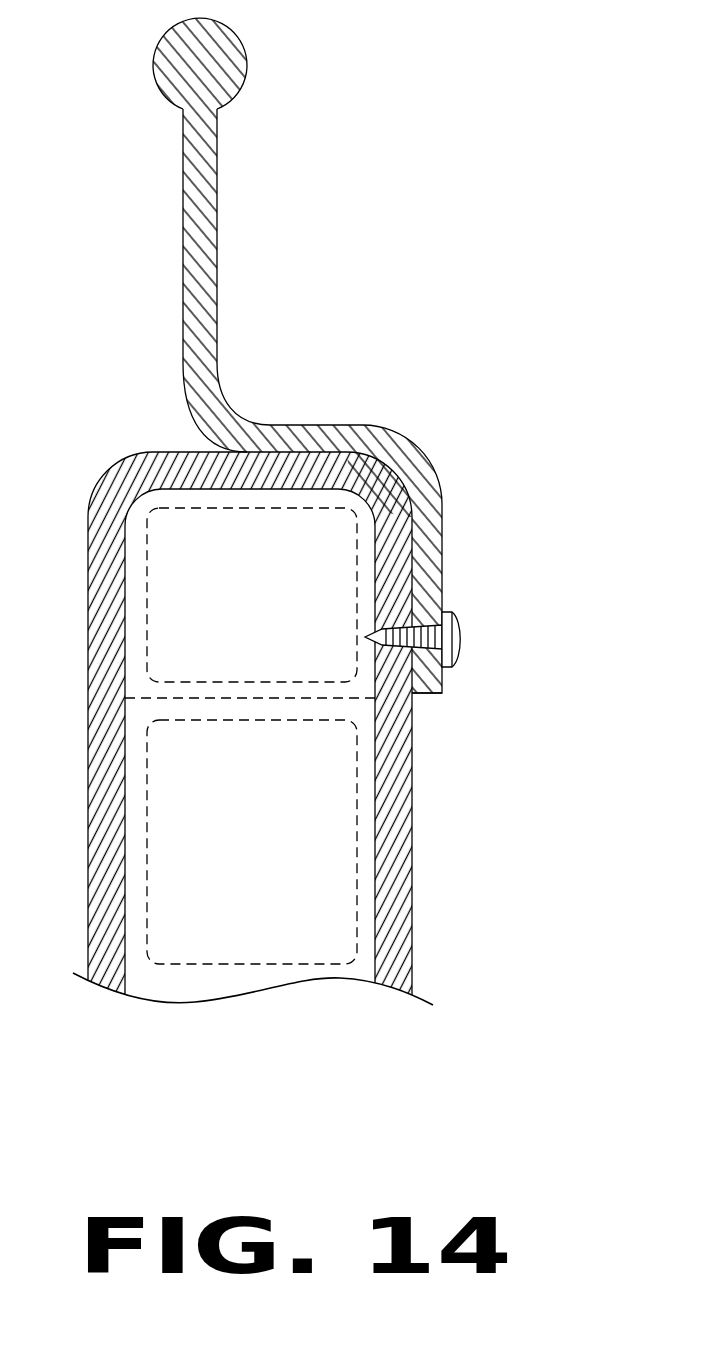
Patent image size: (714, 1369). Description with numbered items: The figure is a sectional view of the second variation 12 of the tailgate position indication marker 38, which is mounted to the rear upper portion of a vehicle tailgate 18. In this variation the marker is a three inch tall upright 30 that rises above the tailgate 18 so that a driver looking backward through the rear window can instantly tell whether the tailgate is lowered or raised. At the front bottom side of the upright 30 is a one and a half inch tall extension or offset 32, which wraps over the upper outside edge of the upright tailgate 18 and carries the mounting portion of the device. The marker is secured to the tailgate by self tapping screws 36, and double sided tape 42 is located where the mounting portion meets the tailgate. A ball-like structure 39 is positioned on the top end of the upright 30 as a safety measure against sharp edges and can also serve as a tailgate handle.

The second variation 12 is at (356, 480).
The tailgate 18 is at (323, 731).
The upright marker 30 is at (183, 267).
The extension or offset 32 is at (323, 423).
The self tapping screws 36 is at (464, 621).
The tailgate position indication marker 38 is at (289, 233).
The ball-like structure 39 is at (167, 98).
The double sided tape 42 is at (418, 700).